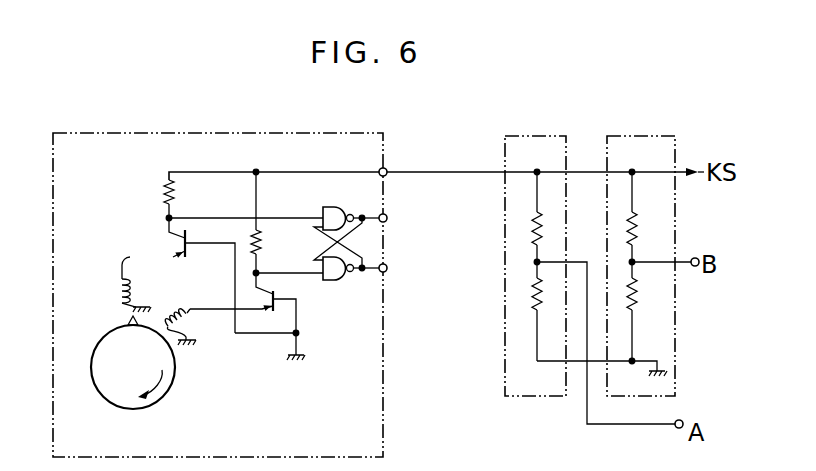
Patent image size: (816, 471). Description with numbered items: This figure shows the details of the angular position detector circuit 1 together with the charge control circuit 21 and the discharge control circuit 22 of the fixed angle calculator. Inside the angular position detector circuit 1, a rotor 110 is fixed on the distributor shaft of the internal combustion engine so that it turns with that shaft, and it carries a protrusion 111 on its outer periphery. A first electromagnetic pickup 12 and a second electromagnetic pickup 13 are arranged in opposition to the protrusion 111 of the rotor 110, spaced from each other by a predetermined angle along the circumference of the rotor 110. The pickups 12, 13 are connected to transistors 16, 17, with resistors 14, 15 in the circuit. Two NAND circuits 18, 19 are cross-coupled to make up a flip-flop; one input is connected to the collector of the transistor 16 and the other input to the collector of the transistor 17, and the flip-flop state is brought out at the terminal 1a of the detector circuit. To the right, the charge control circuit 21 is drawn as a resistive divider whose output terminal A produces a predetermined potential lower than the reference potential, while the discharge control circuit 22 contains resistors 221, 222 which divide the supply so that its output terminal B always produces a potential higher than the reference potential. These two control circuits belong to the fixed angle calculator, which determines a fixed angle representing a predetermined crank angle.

The angular position detector circuit 1 is at (386, 420).
The output terminal 1a is at (388, 218).
The first electromagnetic pickup 12 is at (126, 289).
The second electromagnetic pickup 13 is at (194, 319).
The resistor 14 is at (163, 191).
The resistor 15 is at (259, 238).
The transistor 16 is at (172, 239).
The transistor 17 is at (272, 291).
The NAND circuit 18 is at (332, 207).
The NAND circuit 19 is at (333, 280).
The charge control circuit 21 is at (546, 135).
The discharge control circuit 22 is at (657, 135).
The rotor 110 is at (174, 380).
The protrusion 111 is at (128, 322).
The resistor 221 is at (535, 220).
The resistor 222 is at (534, 301).